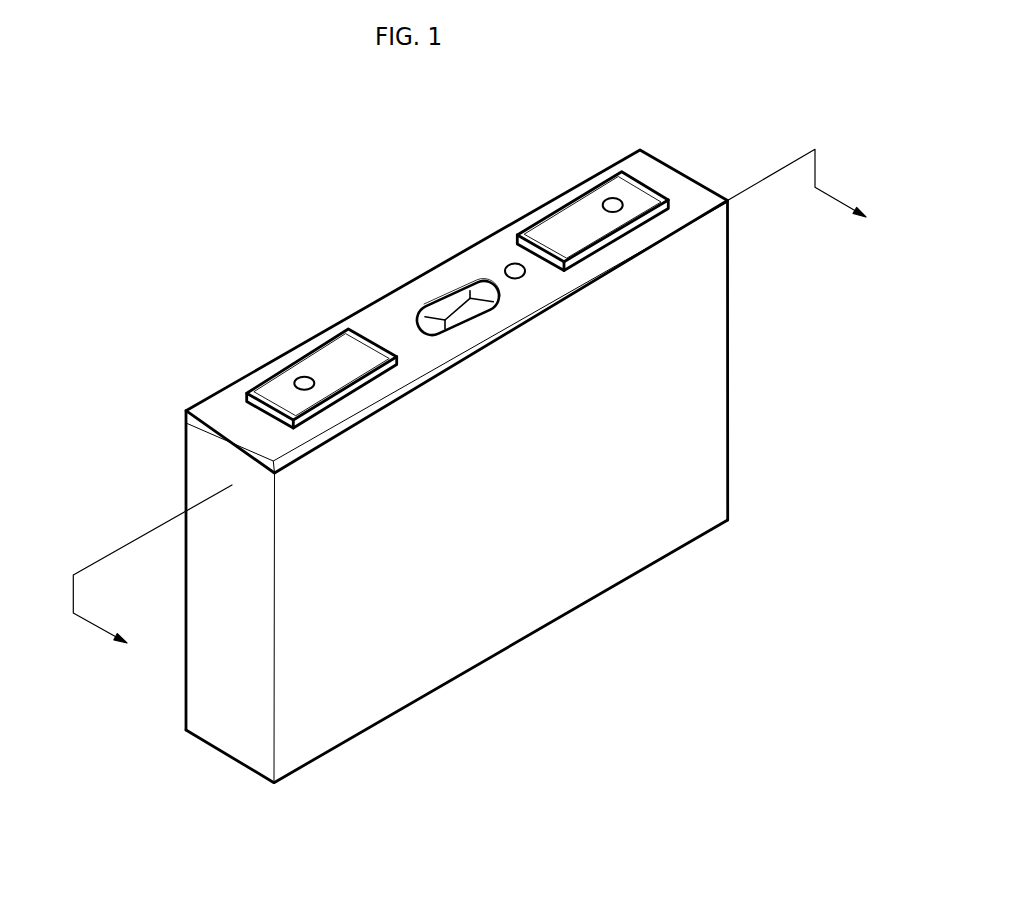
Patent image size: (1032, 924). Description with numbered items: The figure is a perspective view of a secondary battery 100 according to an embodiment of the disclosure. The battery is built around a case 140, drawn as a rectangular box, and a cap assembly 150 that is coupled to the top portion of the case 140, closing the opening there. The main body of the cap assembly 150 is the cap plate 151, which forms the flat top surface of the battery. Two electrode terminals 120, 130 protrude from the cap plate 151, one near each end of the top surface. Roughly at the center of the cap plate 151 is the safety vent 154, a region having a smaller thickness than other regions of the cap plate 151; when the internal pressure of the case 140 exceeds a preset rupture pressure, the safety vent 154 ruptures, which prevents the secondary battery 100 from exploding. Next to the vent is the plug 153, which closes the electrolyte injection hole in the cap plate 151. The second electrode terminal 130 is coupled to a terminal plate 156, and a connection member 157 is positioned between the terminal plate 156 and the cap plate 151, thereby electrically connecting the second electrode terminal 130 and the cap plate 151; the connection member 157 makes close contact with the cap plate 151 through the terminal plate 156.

The secondary battery 100 is at (92, 98).
The electrode terminal 120 is at (297, 378).
The second electrode terminal 130 is at (610, 197).
The case 140 is at (527, 613).
The cap assembly 150 is at (689, 148).
The cap plate 151 is at (220, 405).
The plug 153 is at (506, 262).
The safety vent 154 is at (437, 305).
The terminal plate 156 is at (400, 360).
The connection member 157 is at (510, 263).